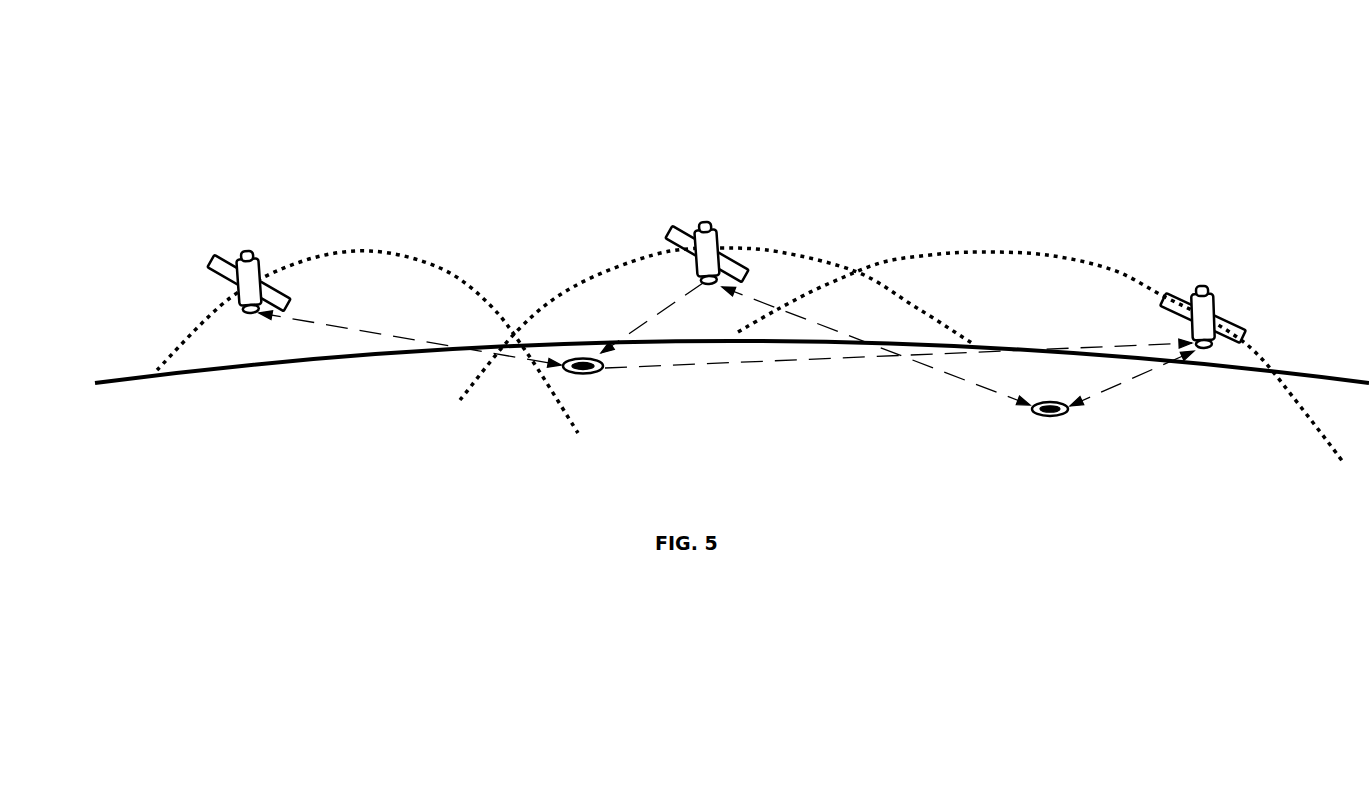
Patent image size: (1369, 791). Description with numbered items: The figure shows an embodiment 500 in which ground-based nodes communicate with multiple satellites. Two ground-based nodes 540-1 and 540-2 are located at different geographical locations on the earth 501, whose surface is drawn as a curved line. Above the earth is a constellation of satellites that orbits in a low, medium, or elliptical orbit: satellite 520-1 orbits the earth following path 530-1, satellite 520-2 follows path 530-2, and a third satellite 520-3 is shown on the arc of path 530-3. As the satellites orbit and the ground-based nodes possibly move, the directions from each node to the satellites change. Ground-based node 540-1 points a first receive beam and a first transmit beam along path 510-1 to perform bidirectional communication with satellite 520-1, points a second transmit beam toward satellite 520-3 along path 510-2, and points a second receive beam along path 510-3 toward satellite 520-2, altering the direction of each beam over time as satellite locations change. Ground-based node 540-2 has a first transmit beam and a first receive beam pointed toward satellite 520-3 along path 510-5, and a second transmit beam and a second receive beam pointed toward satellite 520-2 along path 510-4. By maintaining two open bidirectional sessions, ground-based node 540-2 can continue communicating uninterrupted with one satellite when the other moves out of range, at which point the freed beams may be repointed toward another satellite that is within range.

The embodiment 500 is at (290, 100).
The earth 501 is at (824, 388).
The path 510-1 is at (370, 334).
The path 510-2 is at (720, 367).
The path 510-3 is at (633, 335).
The path 510-4 is at (962, 381).
The path 510-5 is at (1126, 384).
The satellite 520-1 is at (249, 251).
The satellite 520-2 is at (707, 222).
The satellite 520-3 is at (1205, 287).
The path 530-1 is at (395, 252).
The path 530-2 is at (813, 258).
The path 530-3 is at (1117, 268).
The ground-based node 540-1 is at (599, 374).
The ground-based node 540-2 is at (1051, 402).